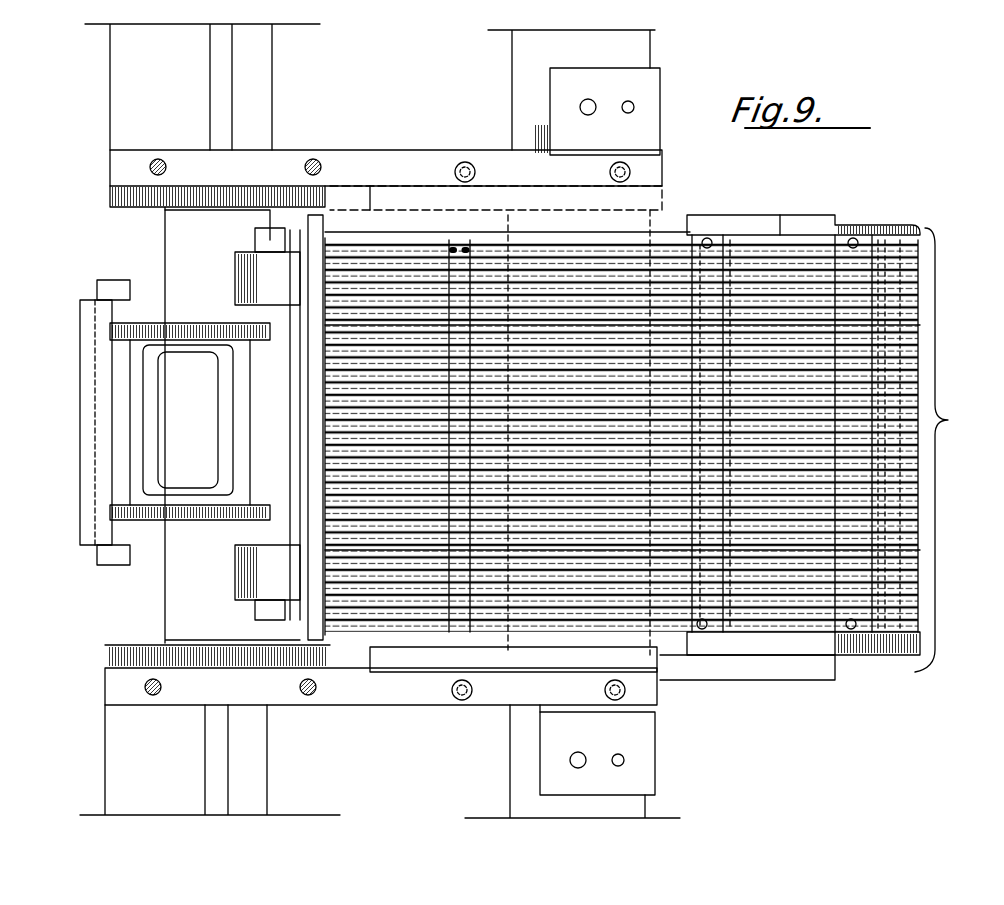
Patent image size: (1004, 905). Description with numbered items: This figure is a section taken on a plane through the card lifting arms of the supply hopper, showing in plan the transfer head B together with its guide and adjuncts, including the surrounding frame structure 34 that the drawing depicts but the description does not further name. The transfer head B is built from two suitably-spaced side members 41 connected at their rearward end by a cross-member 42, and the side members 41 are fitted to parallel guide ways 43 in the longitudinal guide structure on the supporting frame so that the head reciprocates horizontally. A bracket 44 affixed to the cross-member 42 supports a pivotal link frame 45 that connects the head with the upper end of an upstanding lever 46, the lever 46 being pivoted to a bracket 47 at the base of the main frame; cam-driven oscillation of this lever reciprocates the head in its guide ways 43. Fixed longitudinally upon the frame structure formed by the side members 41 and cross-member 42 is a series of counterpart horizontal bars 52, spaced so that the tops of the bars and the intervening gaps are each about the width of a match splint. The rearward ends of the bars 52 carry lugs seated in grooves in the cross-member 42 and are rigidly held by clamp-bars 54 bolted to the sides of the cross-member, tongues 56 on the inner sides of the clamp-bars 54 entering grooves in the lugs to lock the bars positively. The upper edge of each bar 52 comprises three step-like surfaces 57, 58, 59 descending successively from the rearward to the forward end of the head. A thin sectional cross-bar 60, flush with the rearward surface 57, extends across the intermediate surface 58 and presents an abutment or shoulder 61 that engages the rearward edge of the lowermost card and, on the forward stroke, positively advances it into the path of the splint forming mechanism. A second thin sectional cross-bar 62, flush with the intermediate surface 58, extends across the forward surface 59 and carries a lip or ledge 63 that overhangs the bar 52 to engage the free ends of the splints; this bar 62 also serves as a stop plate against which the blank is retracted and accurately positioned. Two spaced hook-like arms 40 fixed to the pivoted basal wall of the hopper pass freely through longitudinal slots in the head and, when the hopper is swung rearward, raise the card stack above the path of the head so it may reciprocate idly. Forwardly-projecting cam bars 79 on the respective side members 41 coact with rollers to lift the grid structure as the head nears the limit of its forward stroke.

The frame 34 is at (328, 152).
The guide ways 43 is at (348, 186).
The bracket 47 is at (385, 245).
The clamp-bars 54 is at (460, 245).
The hook-like arms 40 is at (540, 300).
The tongues 56 is at (335, 290).
The bracket 44 is at (250, 278).
The forward step-like surface 59 is at (320, 292).
The upstanding lever 46 is at (85, 420).
The pivotal link frame 45 is at (188, 420).
The cross-member 42 is at (430, 520).
The sectional cross-bar 60 is at (698, 240).
The side members 41 is at (768, 215).
The abutment or shoulder 61 is at (735, 242).
The intermediate step-like surface 58 is at (760, 240).
The cam bars 79 is at (800, 222).
The horizontal bars 52 is at (810, 270).
The lip or ledge 63 is at (878, 245).
The sectional cross-bar 62 is at (878, 265).
The rearward step-like surface 57 is at (905, 260).
The transfer head B is at (942, 450).